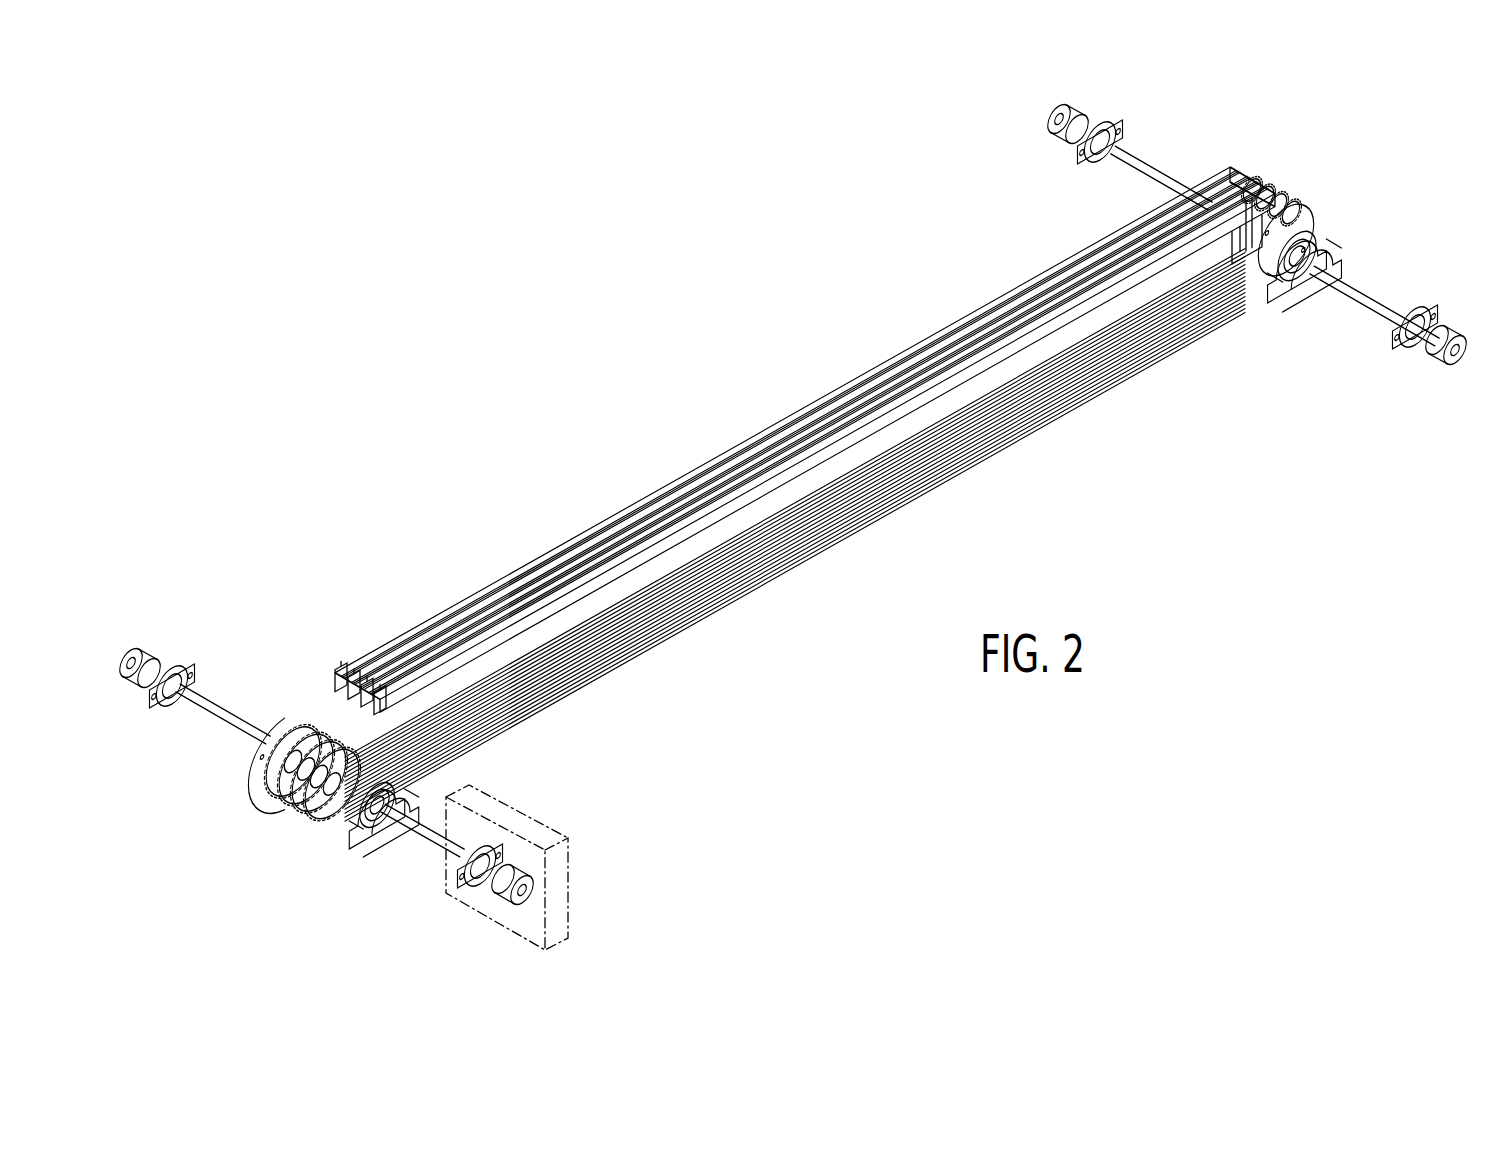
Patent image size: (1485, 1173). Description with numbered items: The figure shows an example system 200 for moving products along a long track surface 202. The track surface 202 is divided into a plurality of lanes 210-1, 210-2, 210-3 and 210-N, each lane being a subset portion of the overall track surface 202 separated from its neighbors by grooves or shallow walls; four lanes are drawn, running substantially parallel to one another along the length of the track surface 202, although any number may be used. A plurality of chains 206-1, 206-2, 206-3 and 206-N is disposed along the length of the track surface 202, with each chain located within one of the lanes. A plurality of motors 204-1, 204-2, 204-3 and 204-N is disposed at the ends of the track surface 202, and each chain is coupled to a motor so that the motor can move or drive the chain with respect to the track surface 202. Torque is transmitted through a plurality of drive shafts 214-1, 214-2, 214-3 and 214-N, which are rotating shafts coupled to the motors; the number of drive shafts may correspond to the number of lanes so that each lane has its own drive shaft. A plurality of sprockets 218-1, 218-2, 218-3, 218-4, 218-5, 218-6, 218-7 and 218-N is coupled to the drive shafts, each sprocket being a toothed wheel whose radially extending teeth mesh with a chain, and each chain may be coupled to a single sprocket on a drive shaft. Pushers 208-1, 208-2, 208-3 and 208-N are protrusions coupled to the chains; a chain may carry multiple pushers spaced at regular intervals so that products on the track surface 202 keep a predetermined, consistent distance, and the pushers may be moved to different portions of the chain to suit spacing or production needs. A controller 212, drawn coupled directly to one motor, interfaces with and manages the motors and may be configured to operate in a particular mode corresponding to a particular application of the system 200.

The system 200 is at (530, 317).
The track surface 202 is at (945, 408).
The motor 204-1 is at (520, 880).
The motor 204-2 is at (135, 655).
The motor 204-3 is at (1442, 352).
The motor 204-N is at (1055, 135).
The chain 206-1 is at (480, 742).
The chain 206-2 is at (540, 688).
The chain 206-3 is at (650, 642).
The chain 206-N is at (775, 580).
The pusher 208-1 is at (345, 697).
The pusher 208-2 is at (372, 688).
The pusher 208-3 is at (355, 678).
The pusher 208-N is at (385, 693).
The lane 210-1 is at (550, 562).
The lane 210-2 is at (665, 522).
The lane 210-3 is at (770, 473).
The lane 210-N is at (857, 437).
The controller 212 is at (570, 885).
The drive shaft 214-1 is at (410, 827).
The drive shaft 214-2 is at (215, 707).
The drive shaft 214-3 is at (1352, 290).
The drive shaft 214-N is at (1138, 172).
The sprocket 218-1 is at (320, 818).
The sprocket 218-2 is at (298, 815).
The sprocket 218-3 is at (276, 800).
The sprocket 218-4 is at (293, 770).
The sprocket 218-5 is at (1300, 225).
The sprocket 218-6 is at (1283, 203).
The sprocket 218-7 is at (1268, 190).
The sprocket 218-N is at (1254, 183).